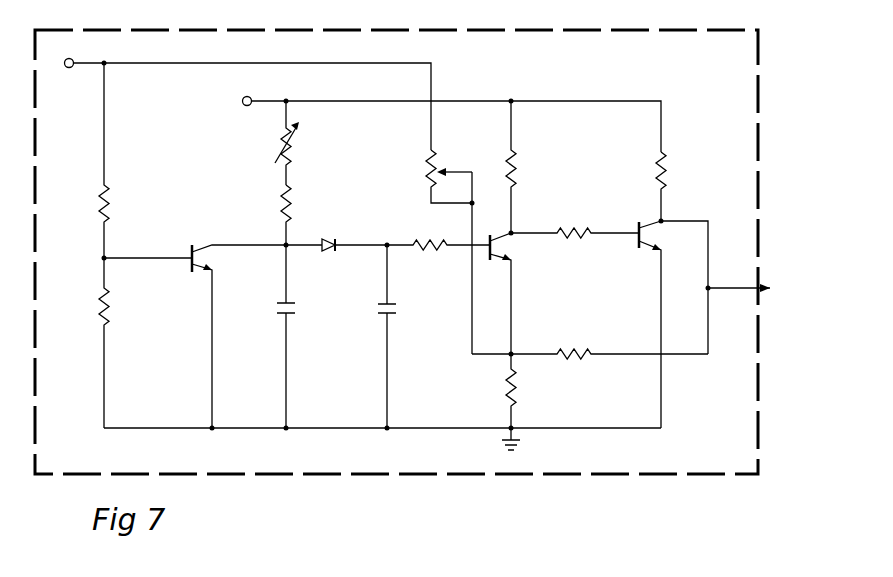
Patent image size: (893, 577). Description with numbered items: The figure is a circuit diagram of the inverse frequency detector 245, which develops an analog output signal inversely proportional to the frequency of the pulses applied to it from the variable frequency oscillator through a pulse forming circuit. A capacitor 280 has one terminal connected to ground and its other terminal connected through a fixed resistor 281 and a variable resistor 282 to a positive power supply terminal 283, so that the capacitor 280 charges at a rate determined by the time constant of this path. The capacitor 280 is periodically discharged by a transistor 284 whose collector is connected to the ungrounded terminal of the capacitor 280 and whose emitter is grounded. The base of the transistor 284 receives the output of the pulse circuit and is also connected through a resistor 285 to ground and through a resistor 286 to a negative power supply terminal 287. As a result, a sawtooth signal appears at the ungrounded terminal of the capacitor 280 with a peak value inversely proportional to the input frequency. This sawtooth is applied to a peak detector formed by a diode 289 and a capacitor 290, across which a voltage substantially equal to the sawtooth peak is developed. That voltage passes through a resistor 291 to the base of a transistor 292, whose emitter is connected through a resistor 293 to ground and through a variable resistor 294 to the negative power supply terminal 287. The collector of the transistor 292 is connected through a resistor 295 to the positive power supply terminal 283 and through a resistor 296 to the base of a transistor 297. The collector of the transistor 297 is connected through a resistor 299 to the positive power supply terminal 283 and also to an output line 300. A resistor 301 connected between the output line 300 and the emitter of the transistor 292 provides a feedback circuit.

The 1/f detector 245 is at (458, 30).
The negative power supply terminal 287 is at (69, 47).
The positive power supply terminal 283 is at (242, 101).
The resistor 286 is at (108, 200).
The resistor 285 is at (108, 302).
The transistor 284 is at (198, 259).
The variable resistor 282 is at (293, 157).
The fixed resistor 281 is at (292, 200).
The capacitor 280 is at (290, 304).
The diode 289 is at (330, 241).
The capacitor 290 is at (391, 305).
The resistor 291 is at (420, 244).
The variable resistor 294 is at (435, 162).
The resistor 295 is at (516, 162).
The transistor 292 is at (496, 246).
The resistor 296 is at (562, 232).
The resistor 301 is at (563, 352).
The resistor 293 is at (516, 380).
The resistor 299 is at (666, 162).
The transistor 297 is at (642, 234).
The output line 300 is at (779, 291).